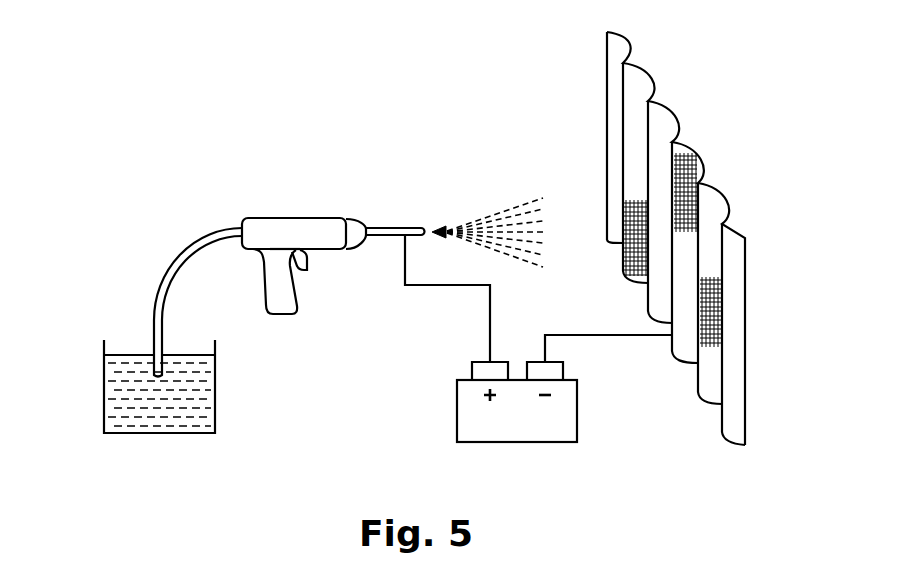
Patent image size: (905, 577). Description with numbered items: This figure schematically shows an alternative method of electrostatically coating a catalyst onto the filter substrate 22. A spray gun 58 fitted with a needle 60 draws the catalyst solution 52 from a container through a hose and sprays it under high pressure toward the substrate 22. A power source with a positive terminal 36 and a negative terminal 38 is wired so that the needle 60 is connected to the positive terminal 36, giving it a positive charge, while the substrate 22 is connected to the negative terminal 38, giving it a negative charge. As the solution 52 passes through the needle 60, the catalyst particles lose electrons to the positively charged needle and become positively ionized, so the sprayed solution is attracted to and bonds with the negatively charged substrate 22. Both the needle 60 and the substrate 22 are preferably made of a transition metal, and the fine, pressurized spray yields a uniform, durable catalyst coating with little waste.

The spray gun 58 is at (298, 232).
The needle 60 is at (412, 228).
The positive terminal of power supply 36 is at (475, 373).
The negative terminal of power supply 38 is at (553, 370).
The catalyst solution 52 is at (200, 398).
The substrate 22 is at (737, 393).